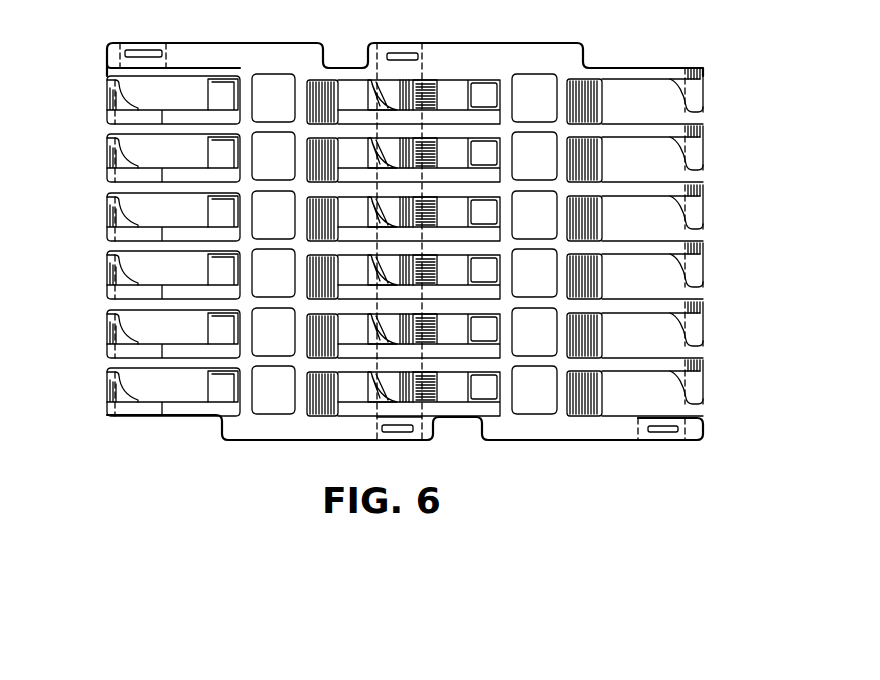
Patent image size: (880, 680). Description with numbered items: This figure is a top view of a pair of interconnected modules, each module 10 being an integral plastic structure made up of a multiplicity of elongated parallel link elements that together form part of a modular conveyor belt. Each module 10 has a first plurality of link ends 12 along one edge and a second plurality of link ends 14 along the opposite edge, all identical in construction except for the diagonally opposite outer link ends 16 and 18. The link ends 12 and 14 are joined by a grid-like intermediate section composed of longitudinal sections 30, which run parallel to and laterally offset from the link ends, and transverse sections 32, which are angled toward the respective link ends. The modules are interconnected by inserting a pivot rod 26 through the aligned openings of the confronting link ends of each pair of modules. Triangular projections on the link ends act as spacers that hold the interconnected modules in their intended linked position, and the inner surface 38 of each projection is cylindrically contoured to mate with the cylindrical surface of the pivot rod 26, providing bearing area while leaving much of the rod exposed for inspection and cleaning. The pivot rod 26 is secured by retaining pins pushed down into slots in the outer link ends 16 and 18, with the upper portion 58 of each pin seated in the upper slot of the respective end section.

The module 10 is at (593, 40).
The first plurality of link ends 12 is at (78, 203).
The second plurality of link ends 14 is at (710, 223).
The outer link end 16 is at (115, 42).
The outer link end 18 is at (432, 441).
The pivot rod 26 is at (402, 90).
The longitudinal section 30 is at (283, 400).
The transverse section 32 is at (240, 380).
The inner surface 38 is at (440, 98).
The upper portion 58 is at (416, 55).